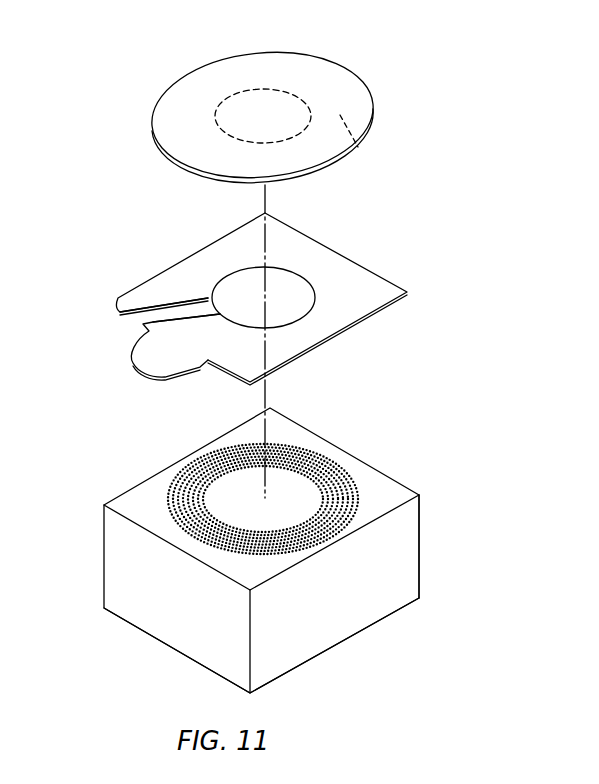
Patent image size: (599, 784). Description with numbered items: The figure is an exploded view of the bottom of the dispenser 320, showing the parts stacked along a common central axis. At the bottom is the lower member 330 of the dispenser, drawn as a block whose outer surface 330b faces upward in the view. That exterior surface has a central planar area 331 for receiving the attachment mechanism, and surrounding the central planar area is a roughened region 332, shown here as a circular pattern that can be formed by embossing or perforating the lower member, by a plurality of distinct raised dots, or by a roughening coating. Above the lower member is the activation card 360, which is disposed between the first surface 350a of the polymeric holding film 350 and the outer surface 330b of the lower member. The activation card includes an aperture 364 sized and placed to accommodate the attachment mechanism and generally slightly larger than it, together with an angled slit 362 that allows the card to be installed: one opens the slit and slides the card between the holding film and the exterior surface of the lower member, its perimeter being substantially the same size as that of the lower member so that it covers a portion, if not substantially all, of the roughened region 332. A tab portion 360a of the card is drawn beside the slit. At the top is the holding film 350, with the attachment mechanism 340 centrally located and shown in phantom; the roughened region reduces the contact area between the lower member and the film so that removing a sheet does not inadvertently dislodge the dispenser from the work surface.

The dispenser 320 is at (430, 538).
The lower member 330 is at (295, 437).
The outer surface of lower member 330b is at (387, 483).
The central planar area 331 is at (262, 515).
The roughened region 332 is at (177, 490).
The attachment mechanism 340 is at (237, 107).
The holding film 350 is at (175, 110).
The first surface of holding film 350a is at (352, 147).
The activation card 360 is at (377, 285).
The tab of plate 360a is at (142, 352).
The angled slit 362 is at (170, 315).
The aperture 364 is at (280, 282).